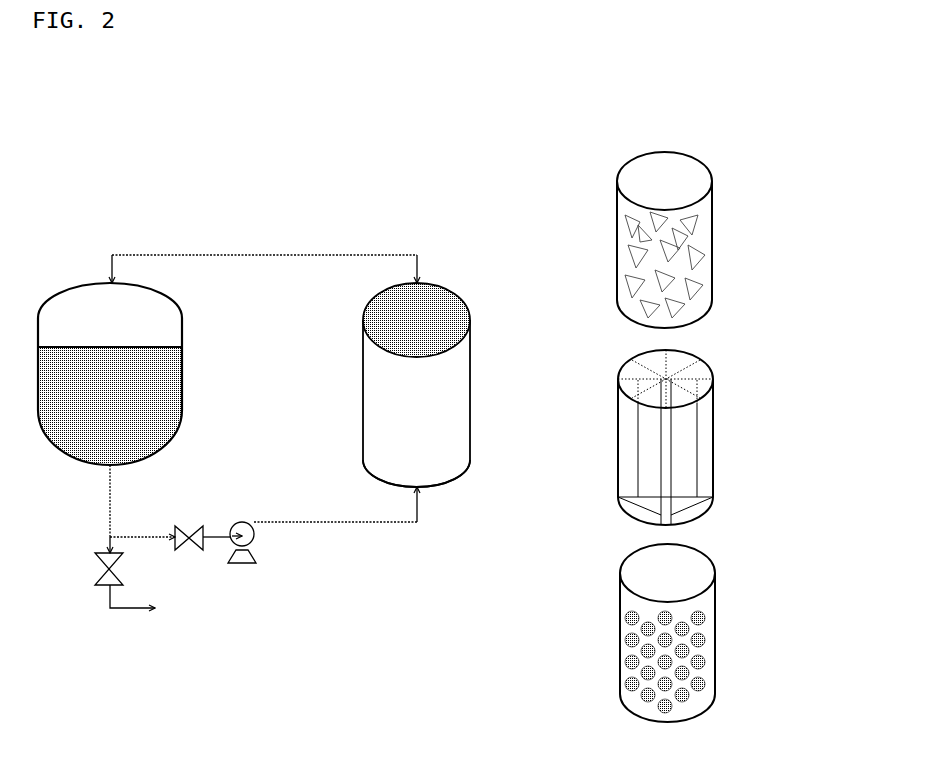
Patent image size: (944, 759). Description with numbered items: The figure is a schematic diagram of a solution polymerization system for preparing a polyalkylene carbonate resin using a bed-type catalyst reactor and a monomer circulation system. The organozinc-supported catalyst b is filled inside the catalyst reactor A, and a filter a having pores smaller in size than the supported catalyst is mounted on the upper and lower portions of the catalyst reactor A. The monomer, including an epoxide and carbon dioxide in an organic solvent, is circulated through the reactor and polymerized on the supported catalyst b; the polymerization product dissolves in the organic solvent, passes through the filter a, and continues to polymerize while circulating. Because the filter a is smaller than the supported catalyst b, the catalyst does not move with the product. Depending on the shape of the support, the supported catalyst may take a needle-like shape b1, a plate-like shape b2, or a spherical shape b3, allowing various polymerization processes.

The catalyst reactor A is at (110, 374).
The filter a is at (416, 385).
The organozinc-supported catalyst b is at (416, 385).
The supported catalyst of a needle-like shape b1 is at (675, 255).
The supported catalyst of a plate-like shape b2 is at (675, 457).
The supported catalyst of a spherical shape b3 is at (675, 655).